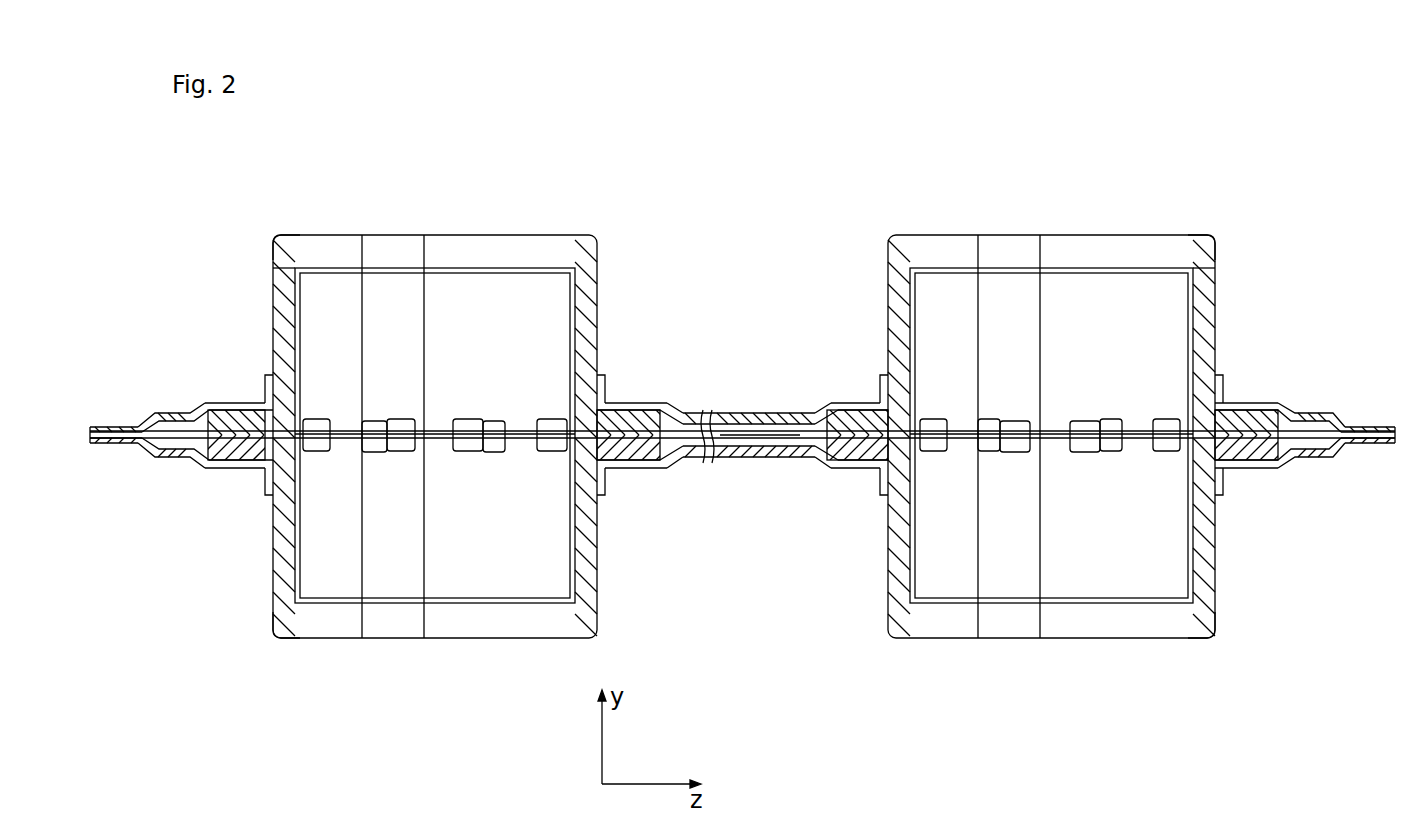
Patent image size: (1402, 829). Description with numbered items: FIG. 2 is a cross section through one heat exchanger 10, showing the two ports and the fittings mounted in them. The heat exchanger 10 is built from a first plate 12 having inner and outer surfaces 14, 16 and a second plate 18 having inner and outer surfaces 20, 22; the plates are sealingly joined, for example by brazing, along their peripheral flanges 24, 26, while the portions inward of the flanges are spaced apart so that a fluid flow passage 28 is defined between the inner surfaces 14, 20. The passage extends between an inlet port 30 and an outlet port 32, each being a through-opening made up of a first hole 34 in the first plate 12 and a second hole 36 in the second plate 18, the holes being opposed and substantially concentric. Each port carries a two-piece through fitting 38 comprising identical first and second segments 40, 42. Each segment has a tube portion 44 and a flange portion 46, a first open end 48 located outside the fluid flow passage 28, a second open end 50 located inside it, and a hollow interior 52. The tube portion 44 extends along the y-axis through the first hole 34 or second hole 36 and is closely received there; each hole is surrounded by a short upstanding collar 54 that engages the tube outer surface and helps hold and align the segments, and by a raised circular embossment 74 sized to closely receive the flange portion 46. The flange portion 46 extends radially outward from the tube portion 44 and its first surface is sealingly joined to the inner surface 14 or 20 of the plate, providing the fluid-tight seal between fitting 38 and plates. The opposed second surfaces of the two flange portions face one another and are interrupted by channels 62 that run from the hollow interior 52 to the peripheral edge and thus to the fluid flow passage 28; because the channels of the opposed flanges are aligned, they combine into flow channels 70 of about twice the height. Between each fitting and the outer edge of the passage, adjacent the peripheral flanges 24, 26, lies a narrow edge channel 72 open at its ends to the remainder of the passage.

The heat exchanger 10 is at (810, 244).
The first plate 12 is at (737, 412).
The inner surface of first plate 14 is at (766, 420).
The outer surface of first plate 16 is at (793, 412).
The second plate 18 is at (726, 455).
The inner surface of second plate 20 is at (752, 447).
The outer surface of second plate 22 is at (785, 448).
The peripheral flange of first plate 24 is at (103, 427).
The peripheral flange of second plate 26 is at (132, 442).
The fluid flow passage 28 is at (680, 430).
The inlet port 30 is at (310, 552).
The outlet port 32 is at (1178, 565).
The first hole 34 is at (603, 380).
The second hole 36 is at (604, 500).
The two-piece through fitting 38 is at (275, 285).
The first segment 40 is at (280, 236).
The second segment 42 is at (278, 637).
The tube portion 44 is at (275, 335).
The flange portion 46 is at (220, 438).
The first open end 48 is at (370, 236).
The second open end 50 is at (441, 428).
The hollow interior 52 is at (465, 536).
The collar 54 is at (267, 392).
The channel 62 is at (315, 422).
The combined flow channel 70 is at (1105, 456).
The narrow edge channel 72 is at (170, 445).
The raised circular embossment 74 is at (632, 405).